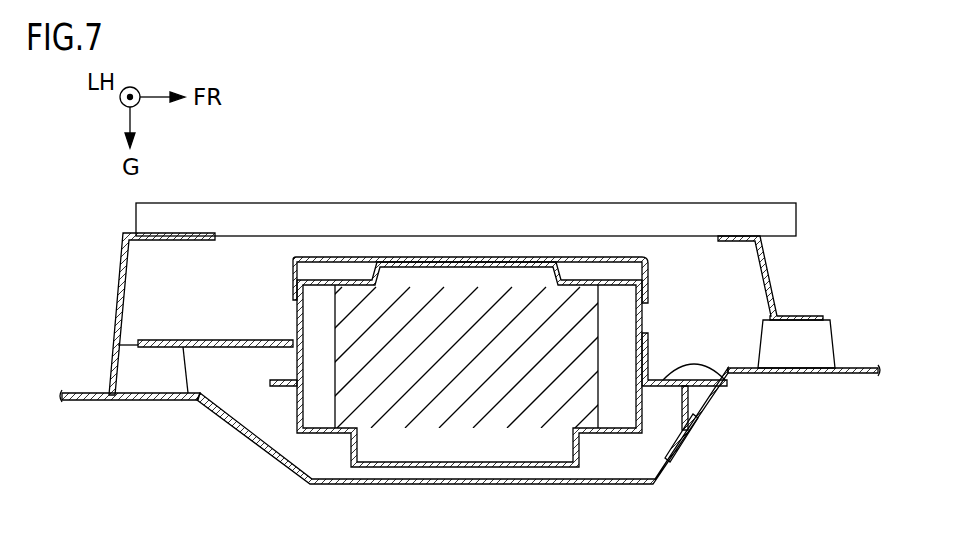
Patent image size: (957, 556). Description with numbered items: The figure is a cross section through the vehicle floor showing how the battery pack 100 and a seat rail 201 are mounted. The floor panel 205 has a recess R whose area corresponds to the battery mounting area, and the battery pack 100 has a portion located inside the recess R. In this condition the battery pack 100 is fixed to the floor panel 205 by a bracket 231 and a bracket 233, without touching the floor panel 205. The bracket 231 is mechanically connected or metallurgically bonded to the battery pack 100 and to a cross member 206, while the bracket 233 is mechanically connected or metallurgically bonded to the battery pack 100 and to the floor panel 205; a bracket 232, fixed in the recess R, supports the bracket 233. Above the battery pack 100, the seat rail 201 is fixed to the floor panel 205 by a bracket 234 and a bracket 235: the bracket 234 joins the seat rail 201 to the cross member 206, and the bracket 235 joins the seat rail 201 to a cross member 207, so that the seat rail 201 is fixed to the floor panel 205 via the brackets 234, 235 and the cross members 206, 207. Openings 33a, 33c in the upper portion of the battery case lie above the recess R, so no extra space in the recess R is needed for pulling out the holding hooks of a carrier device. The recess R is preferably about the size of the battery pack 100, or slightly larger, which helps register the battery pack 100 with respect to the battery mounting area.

The seat rail 201 is at (608, 215).
The bracket 234 is at (122, 268).
The bracket 231 is at (207, 338).
The cross member 206 is at (130, 378).
The floor panel 205 is at (860, 373).
The opening 33a is at (650, 263).
The opening 33c is at (293, 257).
The battery pack 100 is at (503, 412).
The bracket 233 is at (727, 372).
The bracket 232 is at (690, 400).
The bracket 235 is at (778, 272).
The cross member 207 is at (818, 342).
The recess R is at (237, 421).